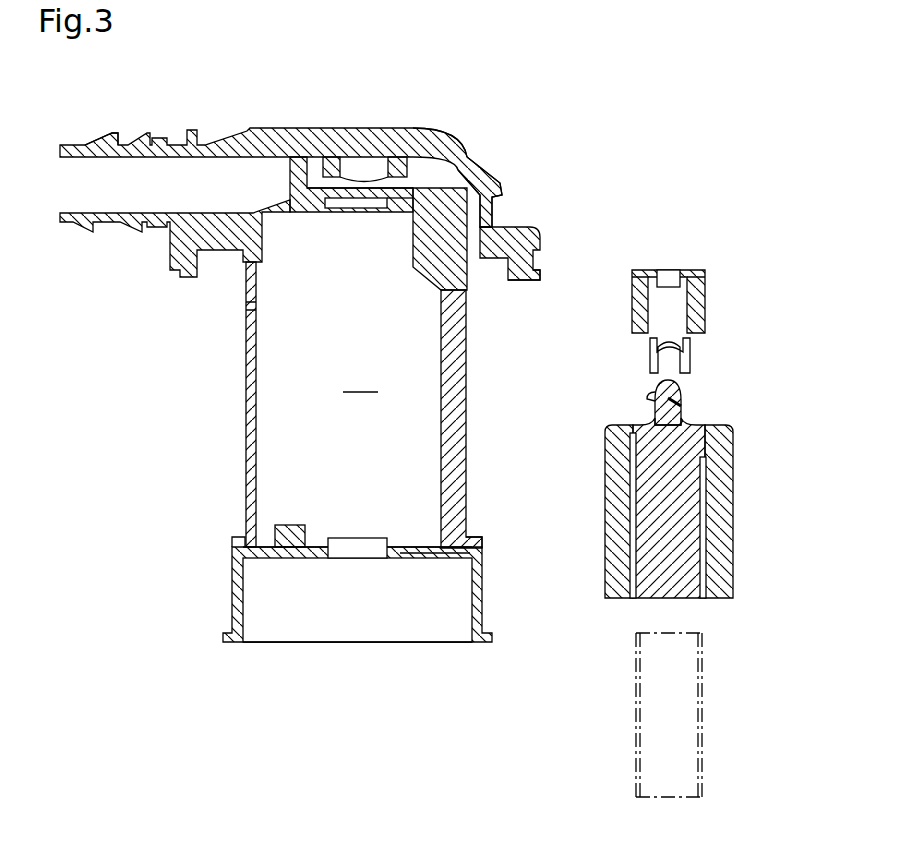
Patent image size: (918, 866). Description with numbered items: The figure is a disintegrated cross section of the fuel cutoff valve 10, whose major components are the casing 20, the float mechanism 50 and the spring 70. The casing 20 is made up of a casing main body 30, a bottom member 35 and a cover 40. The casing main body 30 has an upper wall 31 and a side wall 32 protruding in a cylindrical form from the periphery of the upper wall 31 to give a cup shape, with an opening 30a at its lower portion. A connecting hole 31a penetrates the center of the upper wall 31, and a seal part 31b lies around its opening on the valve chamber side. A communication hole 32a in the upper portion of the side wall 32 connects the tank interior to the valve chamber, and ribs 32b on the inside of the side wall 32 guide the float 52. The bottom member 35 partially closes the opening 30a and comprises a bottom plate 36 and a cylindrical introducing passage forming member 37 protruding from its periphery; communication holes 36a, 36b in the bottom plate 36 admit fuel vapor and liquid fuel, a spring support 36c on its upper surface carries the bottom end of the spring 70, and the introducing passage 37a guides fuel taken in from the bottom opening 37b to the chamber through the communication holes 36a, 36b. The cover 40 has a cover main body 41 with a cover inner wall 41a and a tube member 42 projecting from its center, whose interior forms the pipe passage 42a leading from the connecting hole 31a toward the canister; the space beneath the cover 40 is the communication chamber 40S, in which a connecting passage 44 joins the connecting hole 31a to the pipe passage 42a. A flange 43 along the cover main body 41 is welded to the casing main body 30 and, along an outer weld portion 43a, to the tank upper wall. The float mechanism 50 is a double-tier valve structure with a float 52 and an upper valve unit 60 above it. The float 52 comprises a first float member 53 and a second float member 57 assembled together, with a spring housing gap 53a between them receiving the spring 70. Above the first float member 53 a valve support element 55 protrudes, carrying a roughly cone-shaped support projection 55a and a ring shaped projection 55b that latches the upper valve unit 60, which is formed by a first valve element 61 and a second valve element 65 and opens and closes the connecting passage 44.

The fuel cutoff valve 10 is at (470, 150).
The casing 20 is at (170, 377).
The casing main body 30 is at (246, 412).
The opening 30a is at (483, 540).
The upper wall 31 is at (313, 183).
The connecting hole 31a is at (352, 203).
The seal part 31b is at (402, 203).
The side wall 32 is at (467, 428).
The communication hole 32a is at (257, 304).
The ribs 32b is at (450, 348).
The bottom member 35 is at (233, 550).
The bottom plate 36 is at (470, 557).
The communication hole 36a is at (352, 540).
The communication hole 36b is at (428, 543).
The spring support 36c is at (308, 540).
The introducing passage forming member 37 is at (483, 583).
The introducing passage 37a is at (388, 613).
The opening 37b is at (362, 642).
The cover 40 is at (320, 128).
The communication chamber 40S is at (362, 175).
The cover main body 41 is at (435, 150).
The cover inner wall 41a is at (415, 160).
The tube member 42 is at (158, 130).
The pipe passage 42a is at (98, 128).
The flange 43 is at (500, 224).
The outer weld portion 43a is at (535, 272).
The connecting passage 44 is at (338, 188).
The float mechanism 50 is at (720, 262).
The float 52 is at (773, 462).
The first float member 53 is at (704, 462).
The spring housing gap 53a is at (632, 548).
The valve support element 55 is at (680, 392).
The support projection 55a is at (662, 392).
The ring shaped projection 55b is at (682, 397).
The second float member 57 is at (726, 488).
The upper valve unit 60 is at (752, 285).
The first valve element 61 is at (707, 303).
The second valve element 65 is at (693, 353).
The spring 70 is at (704, 718).